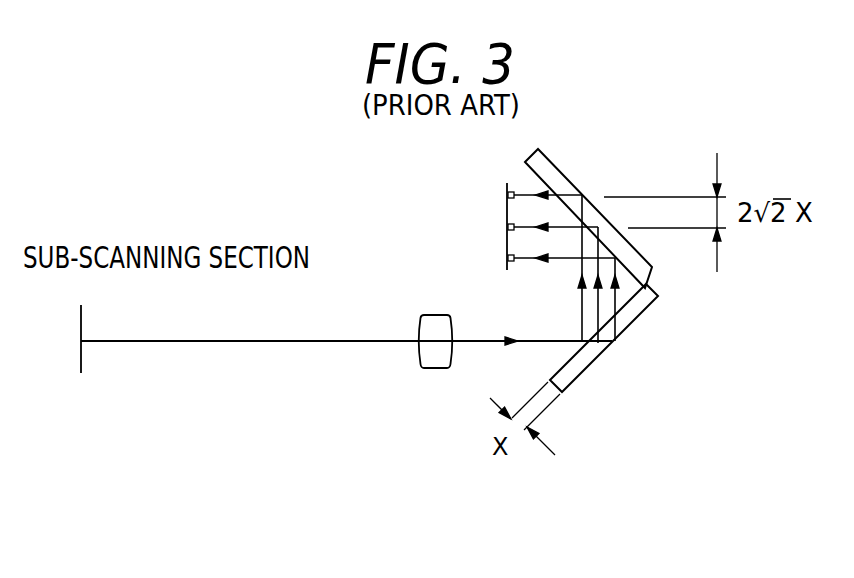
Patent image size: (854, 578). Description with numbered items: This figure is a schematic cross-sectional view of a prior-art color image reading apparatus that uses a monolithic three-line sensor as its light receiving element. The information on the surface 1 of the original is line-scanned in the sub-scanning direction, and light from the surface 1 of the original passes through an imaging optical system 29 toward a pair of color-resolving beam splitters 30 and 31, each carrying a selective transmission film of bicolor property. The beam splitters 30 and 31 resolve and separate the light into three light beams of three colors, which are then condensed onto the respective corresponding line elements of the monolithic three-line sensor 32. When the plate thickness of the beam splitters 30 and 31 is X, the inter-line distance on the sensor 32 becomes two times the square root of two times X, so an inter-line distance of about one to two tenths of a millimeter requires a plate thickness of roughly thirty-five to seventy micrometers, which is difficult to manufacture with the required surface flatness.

The surface of the original 1 is at (82, 311).
The imaging optical system 29 is at (432, 314).
The color-resolving beam splitter 30 is at (638, 316).
The color-resolving beam splitter 31 is at (648, 262).
The monolithic three-line sensor 32 is at (507, 211).